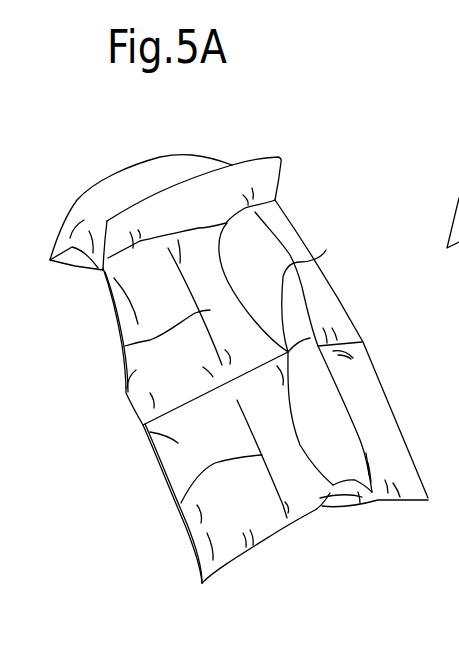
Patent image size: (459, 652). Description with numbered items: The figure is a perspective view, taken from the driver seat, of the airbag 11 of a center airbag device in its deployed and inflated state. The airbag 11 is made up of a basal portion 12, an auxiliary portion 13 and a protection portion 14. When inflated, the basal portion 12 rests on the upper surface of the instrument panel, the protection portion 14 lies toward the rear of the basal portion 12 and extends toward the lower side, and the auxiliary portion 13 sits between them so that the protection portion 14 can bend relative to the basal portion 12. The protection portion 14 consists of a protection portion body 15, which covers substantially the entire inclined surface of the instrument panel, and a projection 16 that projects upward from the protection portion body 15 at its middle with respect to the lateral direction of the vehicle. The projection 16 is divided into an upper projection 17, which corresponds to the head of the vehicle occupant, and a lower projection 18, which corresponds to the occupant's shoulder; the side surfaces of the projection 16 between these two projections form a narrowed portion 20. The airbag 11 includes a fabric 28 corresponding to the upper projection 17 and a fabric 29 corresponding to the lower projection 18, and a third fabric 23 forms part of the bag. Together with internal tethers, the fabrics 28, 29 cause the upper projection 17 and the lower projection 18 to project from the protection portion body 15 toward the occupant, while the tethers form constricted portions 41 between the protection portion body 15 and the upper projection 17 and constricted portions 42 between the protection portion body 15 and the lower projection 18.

The airbag 11 is at (66, 165).
The basal portion 12 is at (143, 177).
The auxiliary portion 13 is at (254, 160).
The protection portion 14 is at (152, 460).
The protection portion body 15 is at (127, 390).
The projection 16 is at (400, 213).
The upper projection 17 is at (326, 250).
The lower projection 18 is at (340, 417).
The narrowed portion 20 is at (283, 363).
The third fabric 23 is at (272, 522).
The fabric 28 is at (283, 243).
The fabric 29 is at (360, 425).
The constricted portions 41 is at (125, 346).
The constricted portions 42 is at (184, 505).